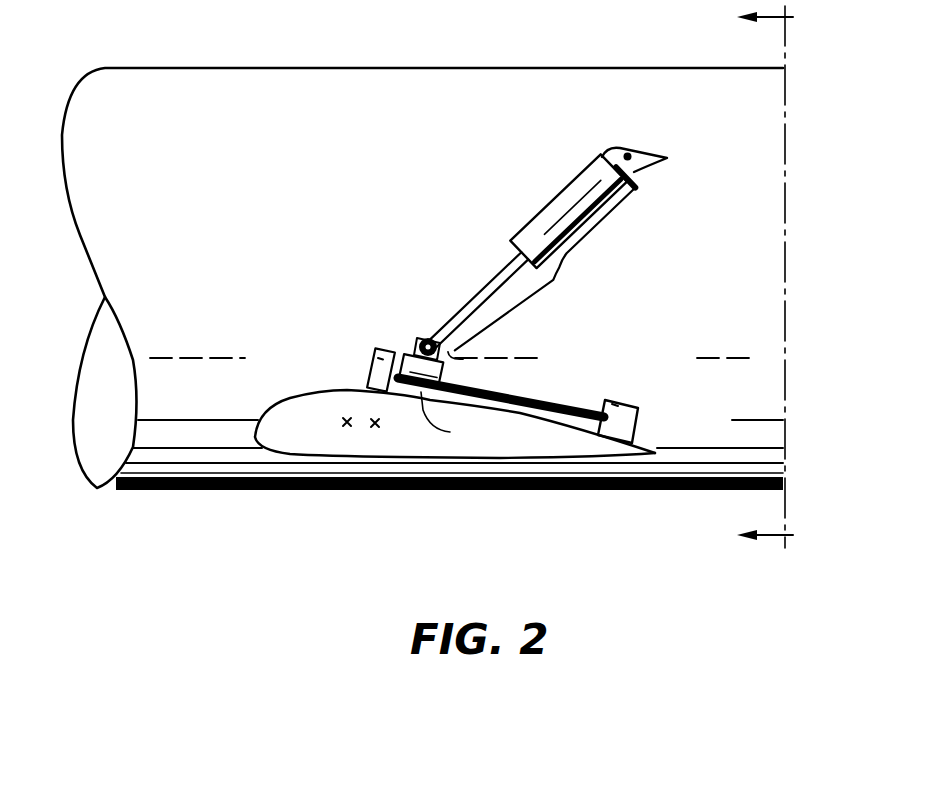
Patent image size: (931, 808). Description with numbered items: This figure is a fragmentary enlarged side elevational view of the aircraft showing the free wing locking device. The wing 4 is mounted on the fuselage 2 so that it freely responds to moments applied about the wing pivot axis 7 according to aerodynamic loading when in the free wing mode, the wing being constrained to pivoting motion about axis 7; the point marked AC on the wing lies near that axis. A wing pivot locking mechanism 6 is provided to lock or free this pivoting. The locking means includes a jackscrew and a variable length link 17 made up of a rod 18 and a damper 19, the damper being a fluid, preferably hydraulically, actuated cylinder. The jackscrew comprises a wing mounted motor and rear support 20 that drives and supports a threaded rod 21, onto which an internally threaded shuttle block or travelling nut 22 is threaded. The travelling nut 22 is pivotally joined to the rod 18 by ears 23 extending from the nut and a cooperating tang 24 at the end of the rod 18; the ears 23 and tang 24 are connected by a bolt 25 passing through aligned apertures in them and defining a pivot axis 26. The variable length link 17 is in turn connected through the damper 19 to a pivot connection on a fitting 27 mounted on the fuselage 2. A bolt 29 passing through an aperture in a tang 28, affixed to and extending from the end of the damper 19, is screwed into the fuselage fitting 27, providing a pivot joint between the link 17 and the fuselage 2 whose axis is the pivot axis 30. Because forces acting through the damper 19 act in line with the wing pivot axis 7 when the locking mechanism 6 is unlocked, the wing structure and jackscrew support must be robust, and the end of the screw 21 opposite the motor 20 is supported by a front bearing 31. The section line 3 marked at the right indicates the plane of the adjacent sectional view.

The fuselage 2 is at (183, 72).
The section line 3- 3 is at (776, 278).
The wing 4 is at (604, 460).
The wing pivot locking mechanism 6 is at (588, 405).
The wing pivot axis 7 is at (347, 430).
The aerodynamic center AC is at (376, 430).
The variable length link 17 is at (541, 274).
The rod 18 is at (493, 279).
The damper 19 is at (558, 198).
The wing mounted motor and rear support 20 is at (640, 423).
The threaded rod 21 is at (553, 397).
The travelling nut 22 is at (450, 417).
The ears 23 is at (420, 347).
The tang 24 is at (429, 338).
The bolt 25 is at (426, 338).
The pivot axis 26 is at (420, 340).
The fuselage fitting 27 is at (658, 152).
The tang 28 is at (636, 181).
The bolt 29 is at (616, 148).
The pivot axis 30 is at (631, 150).
The front bearing 31 is at (368, 374).